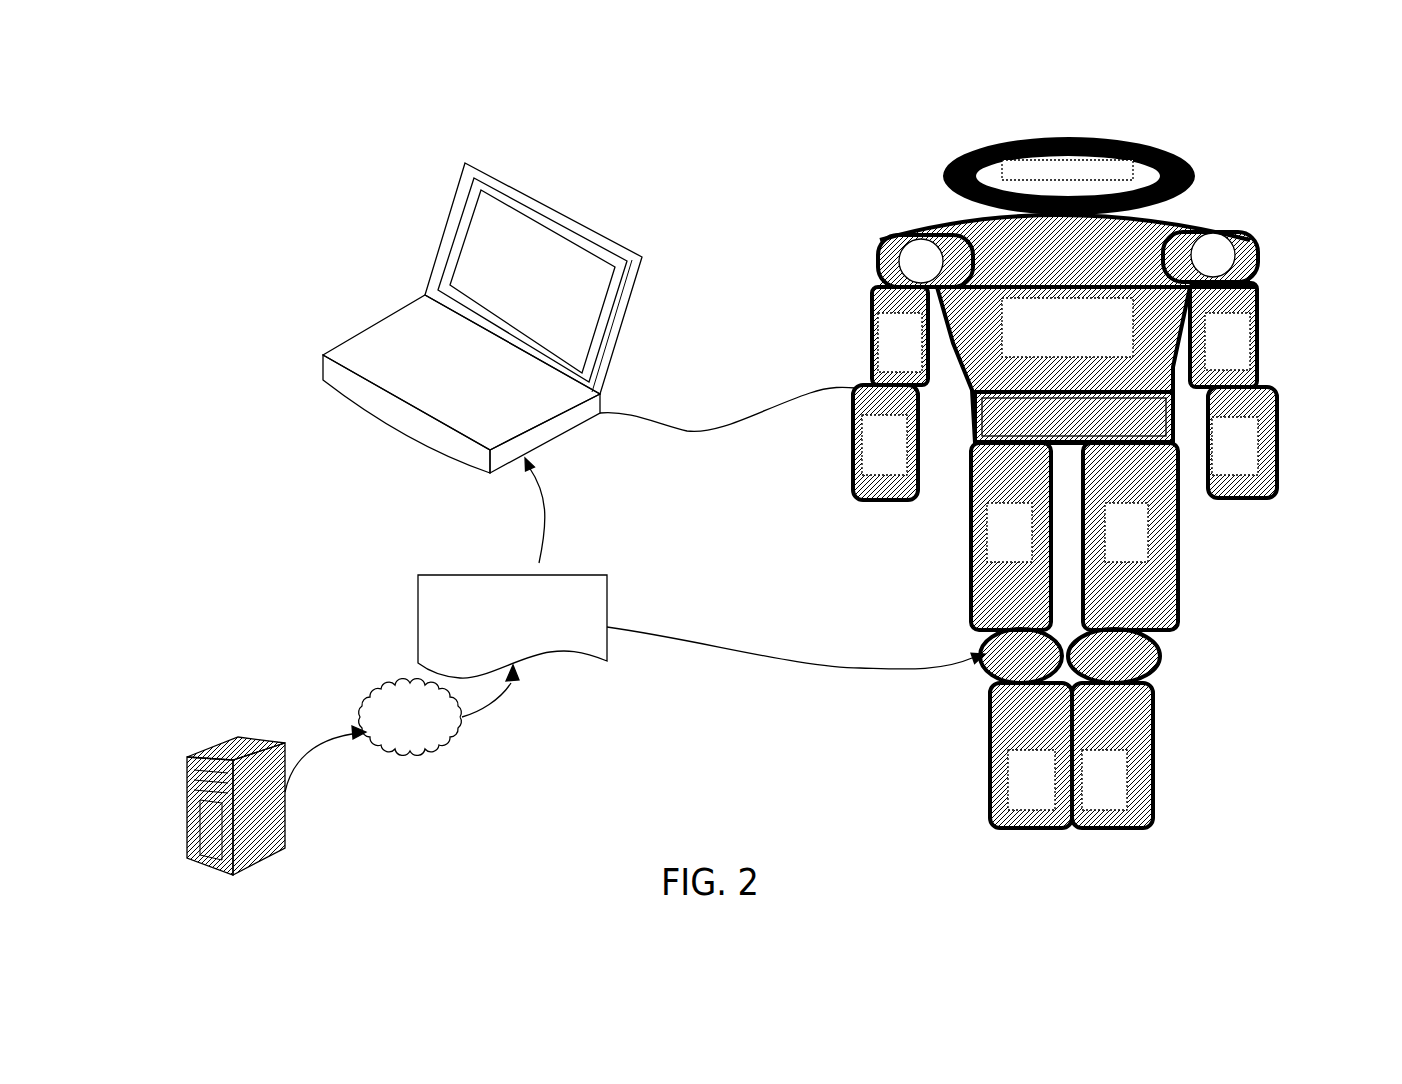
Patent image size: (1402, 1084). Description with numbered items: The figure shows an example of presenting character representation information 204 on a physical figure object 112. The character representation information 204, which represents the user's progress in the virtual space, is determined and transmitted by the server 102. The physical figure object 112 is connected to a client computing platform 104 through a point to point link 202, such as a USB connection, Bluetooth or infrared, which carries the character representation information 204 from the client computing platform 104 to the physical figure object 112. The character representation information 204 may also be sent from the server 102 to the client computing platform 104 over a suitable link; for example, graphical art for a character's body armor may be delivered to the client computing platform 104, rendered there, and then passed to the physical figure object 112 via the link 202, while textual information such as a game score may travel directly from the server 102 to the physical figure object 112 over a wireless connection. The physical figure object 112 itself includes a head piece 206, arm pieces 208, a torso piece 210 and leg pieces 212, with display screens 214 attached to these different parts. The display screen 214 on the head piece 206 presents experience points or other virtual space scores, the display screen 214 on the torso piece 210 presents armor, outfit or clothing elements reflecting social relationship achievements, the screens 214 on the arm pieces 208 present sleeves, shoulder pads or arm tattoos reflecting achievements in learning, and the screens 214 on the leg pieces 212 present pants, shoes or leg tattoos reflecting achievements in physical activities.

The server 102 is at (285, 850).
The client computing platform 104 is at (642, 257).
The physical figure 112 is at (1177, 240).
The point to point link 202 is at (687, 431).
The character representation information 204 is at (607, 576).
The head piece 206 is at (1062, 137).
The arm pieces 208 is at (878, 289).
The torso piece 210 is at (1179, 383).
The leg pieces 212 is at (965, 600).
The display screens 214 is at (1133, 170).